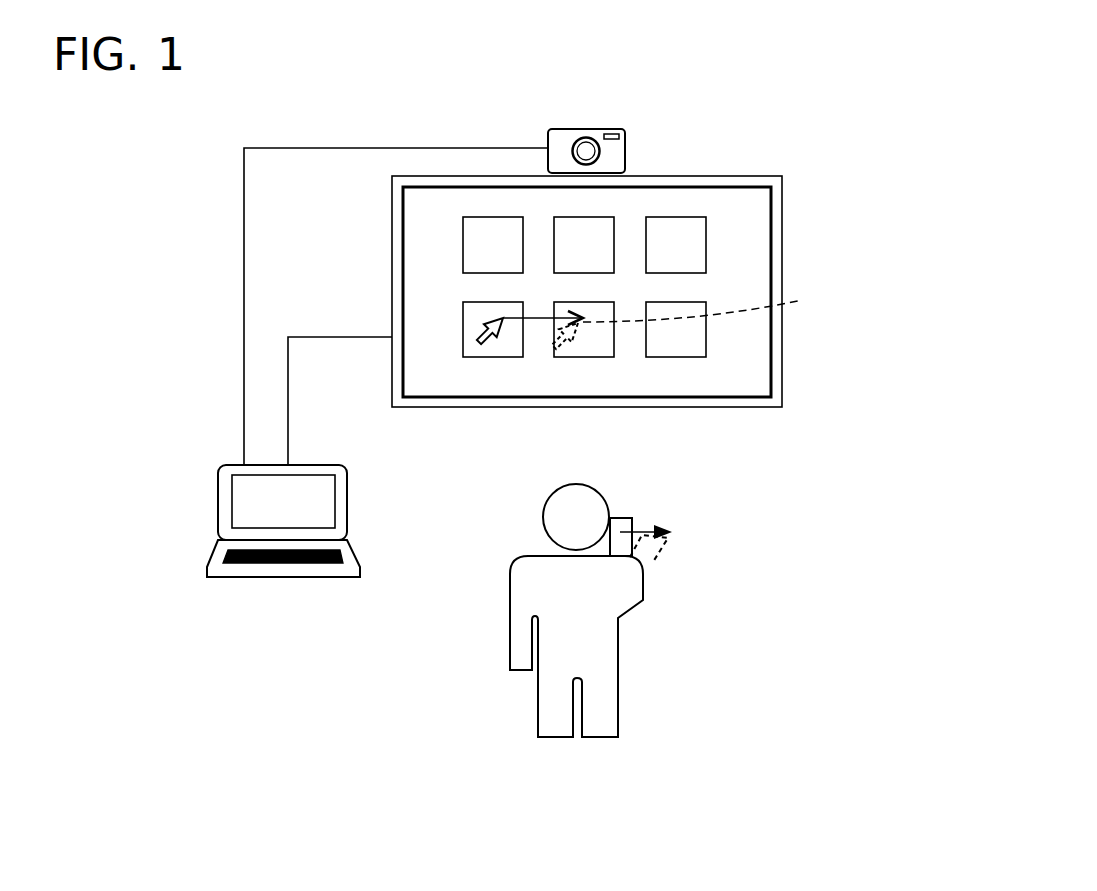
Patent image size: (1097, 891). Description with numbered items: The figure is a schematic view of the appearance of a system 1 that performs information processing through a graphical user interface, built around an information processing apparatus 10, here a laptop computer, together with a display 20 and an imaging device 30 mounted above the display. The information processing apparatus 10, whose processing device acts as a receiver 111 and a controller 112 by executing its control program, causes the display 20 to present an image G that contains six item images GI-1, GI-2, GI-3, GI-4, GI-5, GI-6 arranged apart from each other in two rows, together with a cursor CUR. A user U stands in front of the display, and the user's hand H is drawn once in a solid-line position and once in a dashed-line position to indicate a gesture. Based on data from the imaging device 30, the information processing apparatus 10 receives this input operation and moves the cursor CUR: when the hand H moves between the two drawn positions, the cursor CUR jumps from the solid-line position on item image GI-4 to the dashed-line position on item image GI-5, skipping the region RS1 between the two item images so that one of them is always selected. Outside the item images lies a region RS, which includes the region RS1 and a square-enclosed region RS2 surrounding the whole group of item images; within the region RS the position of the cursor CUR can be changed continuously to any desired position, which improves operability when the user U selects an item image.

The system 1 is at (870, 186).
The information processing apparatus 10 is at (251, 521).
The receiver 111 is at (205, 558).
The controller 112 is at (220, 570).
The display 20 is at (786, 269).
The imaging device 30 is at (634, 146).
The image G is at (775, 227).
The item image GI-1 is at (462, 240).
The item image GI-2 is at (583, 217).
The item image GI-3 is at (678, 217).
The item image GI-4 is at (490, 357).
The item image GI-5 is at (582, 357).
The item image GI-6 is at (672, 357).
The cursor CUR is at (478, 330).
The region RS is at (759, 339).
The region RS1 is at (538, 335).
The square-enclosed region RS2 is at (738, 357).
The user U is at (504, 587).
The hand H is at (633, 525).